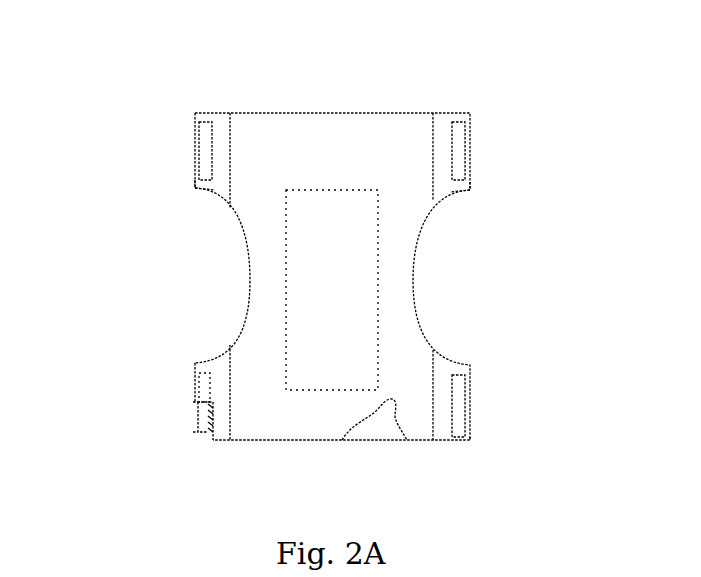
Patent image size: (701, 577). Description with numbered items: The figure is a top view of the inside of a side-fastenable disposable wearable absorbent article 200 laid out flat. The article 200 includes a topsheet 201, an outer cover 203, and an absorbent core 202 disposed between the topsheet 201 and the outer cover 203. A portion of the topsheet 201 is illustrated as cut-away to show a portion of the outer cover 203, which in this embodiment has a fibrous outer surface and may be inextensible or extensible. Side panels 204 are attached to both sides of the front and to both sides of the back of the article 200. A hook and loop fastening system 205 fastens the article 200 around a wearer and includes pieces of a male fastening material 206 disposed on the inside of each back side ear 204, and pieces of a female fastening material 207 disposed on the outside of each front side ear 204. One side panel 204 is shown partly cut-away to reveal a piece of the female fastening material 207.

The side-fastenable disposable wearable absorbent article 200 is at (140, 83).
The topsheet 201 is at (276, 148).
The absorbent core 202 is at (378, 273).
The outer cover 203 is at (380, 441).
The side panels 204 is at (218, 113).
The hook and loop fastening system 205 is at (180, 144).
The male fastening material 206 is at (200, 168).
The female fastening material 207 is at (197, 427).